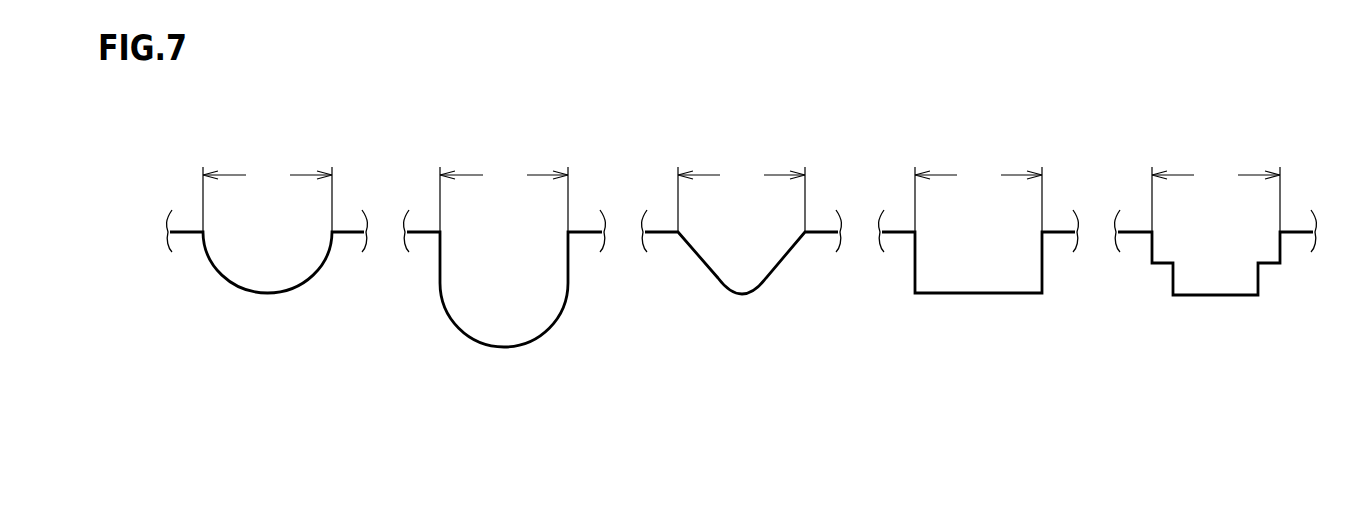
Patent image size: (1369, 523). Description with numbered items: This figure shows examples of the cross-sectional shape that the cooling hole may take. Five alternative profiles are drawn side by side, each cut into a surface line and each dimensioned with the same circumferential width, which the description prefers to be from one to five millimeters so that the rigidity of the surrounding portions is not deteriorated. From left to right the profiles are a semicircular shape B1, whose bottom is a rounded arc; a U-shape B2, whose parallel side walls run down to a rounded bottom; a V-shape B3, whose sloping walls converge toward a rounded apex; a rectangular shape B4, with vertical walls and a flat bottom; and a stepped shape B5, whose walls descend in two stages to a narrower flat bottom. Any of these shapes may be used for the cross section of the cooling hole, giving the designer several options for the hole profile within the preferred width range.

The semicircular shape B1 is at (235, 288).
The U-shape B2 is at (462, 330).
The V-shape B3 is at (713, 280).
The rectangular shape B4 is at (945, 294).
The stepped shape B5 is at (1200, 296).